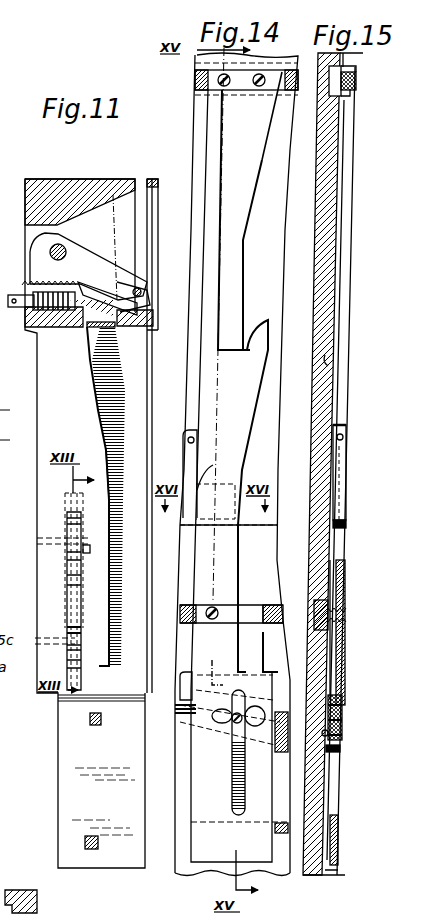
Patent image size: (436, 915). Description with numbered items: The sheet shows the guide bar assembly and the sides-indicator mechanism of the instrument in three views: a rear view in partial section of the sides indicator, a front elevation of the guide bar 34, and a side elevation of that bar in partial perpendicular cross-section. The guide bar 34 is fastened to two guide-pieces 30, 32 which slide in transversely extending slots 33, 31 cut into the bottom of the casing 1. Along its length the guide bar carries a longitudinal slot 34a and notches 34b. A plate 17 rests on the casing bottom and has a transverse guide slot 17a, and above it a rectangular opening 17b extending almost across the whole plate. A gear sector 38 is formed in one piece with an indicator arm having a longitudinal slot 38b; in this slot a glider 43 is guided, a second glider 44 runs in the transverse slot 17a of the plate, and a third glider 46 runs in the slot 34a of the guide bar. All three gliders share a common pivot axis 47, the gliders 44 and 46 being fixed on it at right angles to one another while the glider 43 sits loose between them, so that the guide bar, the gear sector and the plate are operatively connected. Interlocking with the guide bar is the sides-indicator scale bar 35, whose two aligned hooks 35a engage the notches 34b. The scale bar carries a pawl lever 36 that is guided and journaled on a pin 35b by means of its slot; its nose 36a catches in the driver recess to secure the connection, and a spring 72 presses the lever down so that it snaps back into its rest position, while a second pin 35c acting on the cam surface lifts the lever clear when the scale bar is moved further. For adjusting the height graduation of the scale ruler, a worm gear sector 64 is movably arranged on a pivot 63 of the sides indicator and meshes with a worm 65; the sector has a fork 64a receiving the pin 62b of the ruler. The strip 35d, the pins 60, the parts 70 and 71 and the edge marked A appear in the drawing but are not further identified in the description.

In FIG. 15, the casing 1 is at (328, 362).
In FIG. 15, the plate 17 is at (342, 141).
In FIG. 14, the transverse guide slot 17a is at (281, 752).
In FIG. 15, the rectangular opening 17b is at (345, 579).
In FIG. 14, the guide-piece 30 is at (279, 94).
In FIG. 15, the guide-piece 30 is at (350, 90).
In FIG. 14, the transverse slot 31 is at (275, 605).
In FIG. 14, the guide-piece 32 is at (242, 616).
In FIG. 15, the guide-piece 32 is at (345, 609).
In FIG. 14, the transverse slot 33 is at (196, 80).
In FIG. 14, the guide bar 34 is at (232, 272).
In FIG. 15, the guide bar 34 is at (348, 301).
In FIG. 14, the longitudinal slot 34a is at (236, 800).
In FIG. 15, the longitudinal slot 34a is at (335, 811).
In FIG. 14, the notches 34b is at (247, 353).
In FIG. 11, the sides-indicator scale bar 35 is at (22, 892).
In FIG. 11, the hooks 35a is at (110, 345).
In FIG. 11, the pin 35b is at (40, 542).
In FIG. 11, the pin 35c is at (68, 632).
In FIG. 11, the strip 35d is at (148, 186).
In FIG. 11, the pawl-lever 36 is at (68, 576).
In FIG. 11, the nose 36a is at (68, 653).
In FIG. 14, the gear-sector 38 is at (184, 672).
In FIG. 15, the gear-sector 38 is at (332, 751).
In FIG. 14, the longitudinal slot 38b is at (193, 682).
In FIG. 14, the glider 43 is at (176, 706).
In FIG. 15, the glider 43 is at (338, 711).
In FIG. 14, the glider 44 is at (217, 722).
In FIG. 15, the glider 44 is at (335, 736).
In FIG. 14, the glider 46 is at (236, 730).
In FIG. 15, the glider 46 is at (338, 696).
In FIG. 14, the pivot-axis 47 is at (255, 728).
In FIG. 15, the pivot-axis 47 is at (335, 723).
In FIG. 11, the pin 60 is at (93, 727).
In FIG. 11, the pin 62b is at (147, 294).
In FIG. 11, the pivot 63 is at (62, 250).
In FIG. 11, the worm-gear-sector 64 is at (55, 288).
In FIG. 11, the fork 64a is at (150, 306).
In FIG. 11, the worm 65 is at (60, 312).
In FIG. 14, the stop 70 is at (200, 492).
In FIG. 15, the stop 70 is at (350, 528).
In FIG. 14, the latch 71 is at (186, 472).
In FIG. 15, the latch 71 is at (345, 459).
In FIG. 11, the spring 72 is at (79, 578).
In FIG. 11, the edge A is at (110, 452).